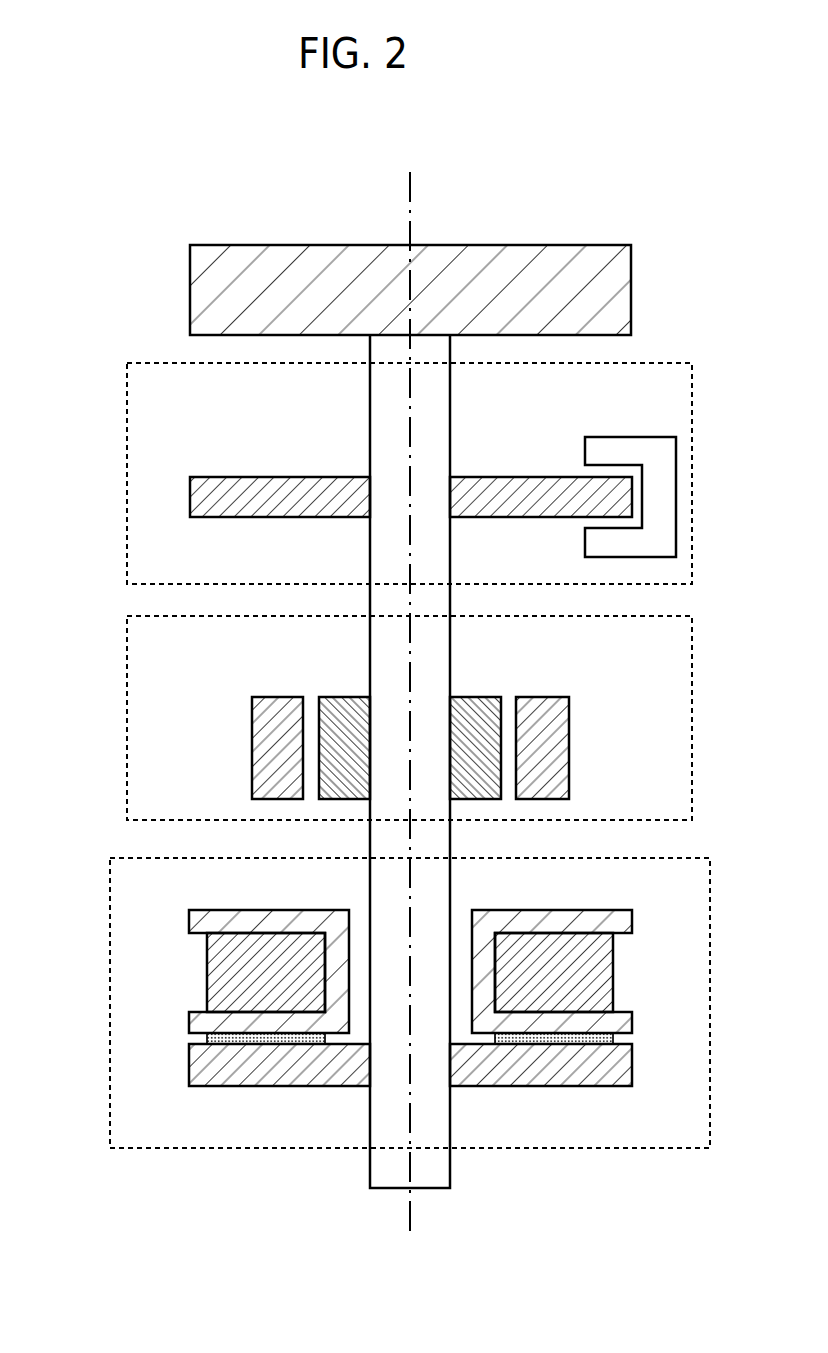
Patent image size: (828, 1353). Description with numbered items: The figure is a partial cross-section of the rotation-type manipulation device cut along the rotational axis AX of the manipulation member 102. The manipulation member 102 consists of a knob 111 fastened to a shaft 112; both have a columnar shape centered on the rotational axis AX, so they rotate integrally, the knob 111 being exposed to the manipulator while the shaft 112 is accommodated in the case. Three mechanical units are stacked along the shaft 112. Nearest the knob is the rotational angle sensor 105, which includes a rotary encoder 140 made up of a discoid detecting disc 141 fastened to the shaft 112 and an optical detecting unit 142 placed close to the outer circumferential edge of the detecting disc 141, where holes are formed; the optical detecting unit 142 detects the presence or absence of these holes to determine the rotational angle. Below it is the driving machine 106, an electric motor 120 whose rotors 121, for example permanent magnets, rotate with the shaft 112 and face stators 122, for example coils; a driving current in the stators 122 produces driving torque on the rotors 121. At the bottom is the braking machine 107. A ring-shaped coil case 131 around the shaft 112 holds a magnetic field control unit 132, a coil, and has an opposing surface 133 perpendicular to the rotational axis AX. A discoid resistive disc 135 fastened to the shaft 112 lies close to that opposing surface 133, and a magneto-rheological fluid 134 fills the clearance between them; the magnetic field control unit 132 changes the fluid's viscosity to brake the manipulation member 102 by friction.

The manipulation member 102 is at (410, 657).
The knob 111 is at (243, 252).
The shaft 112 is at (393, 347).
The rotational axis AX is at (413, 195).
The rotational angle sensor 105 is at (127, 412).
The rotary encoder 140 is at (420, 466).
The detecting disc 141 is at (495, 492).
The optical detecting unit 142 is at (596, 452).
The driving machine 106 is at (125, 718).
The electric motor 120 is at (402, 712).
The rotor 121 is at (478, 707).
The stator 122 is at (258, 756).
The braking machine 107 is at (110, 893).
The coil case 131 is at (330, 924).
The magnetic field control unit 132 is at (209, 977).
The opposing surface 133 is at (197, 1039).
The magneto-rheological fluid 134 is at (236, 1040).
The resistive disc 135 is at (483, 1076).